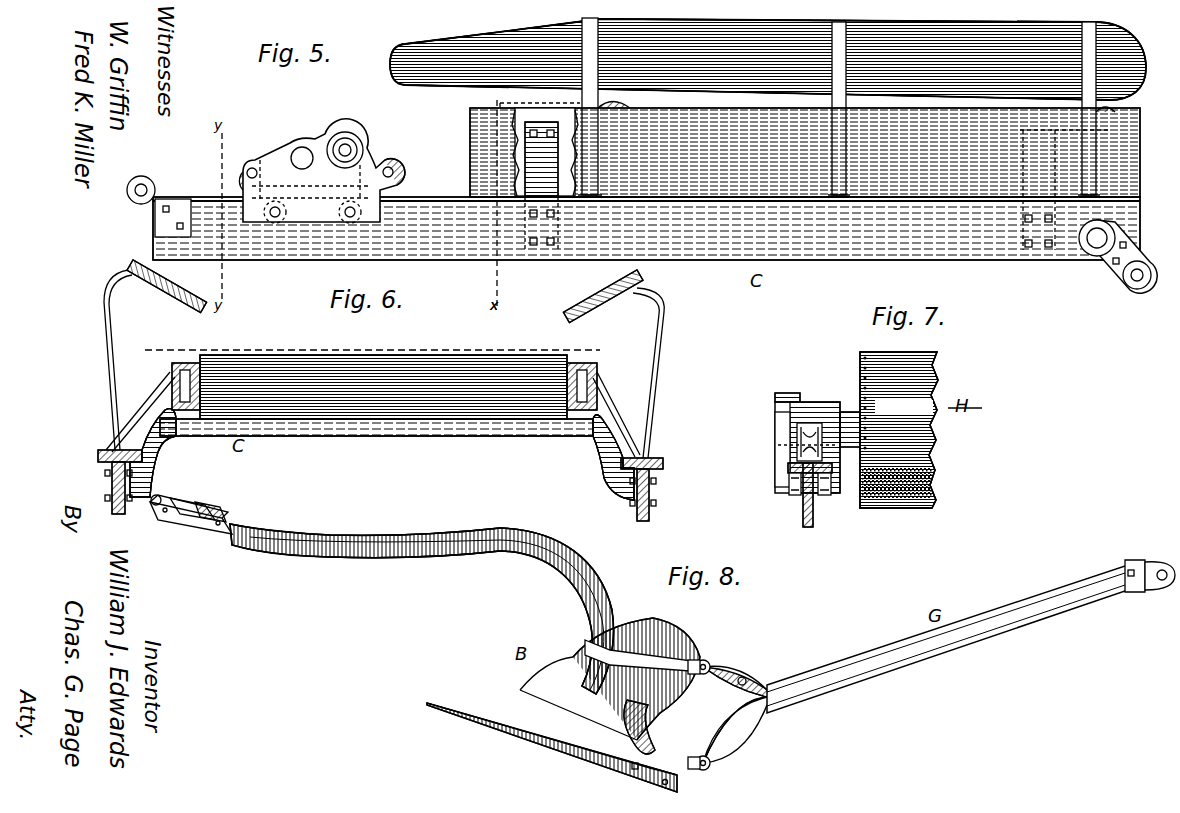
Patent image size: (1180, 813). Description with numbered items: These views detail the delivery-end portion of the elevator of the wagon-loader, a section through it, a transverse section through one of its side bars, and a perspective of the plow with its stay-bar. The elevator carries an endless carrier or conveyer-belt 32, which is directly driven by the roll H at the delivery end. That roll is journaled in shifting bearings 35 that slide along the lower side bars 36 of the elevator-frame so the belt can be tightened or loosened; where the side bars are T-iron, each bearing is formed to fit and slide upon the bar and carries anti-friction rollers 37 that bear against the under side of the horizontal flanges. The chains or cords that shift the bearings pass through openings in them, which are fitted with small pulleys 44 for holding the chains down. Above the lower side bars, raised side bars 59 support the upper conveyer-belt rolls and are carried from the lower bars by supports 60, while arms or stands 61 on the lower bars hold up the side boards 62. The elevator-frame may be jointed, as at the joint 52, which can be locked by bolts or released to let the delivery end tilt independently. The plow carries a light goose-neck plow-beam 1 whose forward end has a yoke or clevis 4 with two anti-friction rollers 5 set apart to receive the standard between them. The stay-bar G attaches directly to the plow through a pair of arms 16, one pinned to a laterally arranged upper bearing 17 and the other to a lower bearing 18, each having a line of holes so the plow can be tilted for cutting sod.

In FIG. 8, the plow-beam 1 is at (400, 556).
In FIG. 8, the yoke or clevis 4 is at (180, 528).
In FIG. 8, the anti-friction rollers 5 is at (185, 503).
In FIG. 8, the arms 16 is at (730, 680).
In FIG. 8, the bearing 17 is at (706, 660).
In FIG. 8, the bearing 18 is at (706, 771).
In FIG. 6, the endless carrier or conveyer-belt 32 is at (572, 362).
In FIG. 5, the shifting bearings 35 is at (305, 140).
In FIG. 7, the shifting bearings 35 is at (826, 404).
In FIG. 5, the side bars 36 is at (605, 250).
In FIG. 6, the side bars 36 is at (112, 480).
In FIG. 7, the side bars 36 is at (813, 517).
In FIG. 5, the anti-friction rollers 37 is at (275, 224).
In FIG. 7, the anti-friction rollers 37 is at (792, 494).
In FIG. 5, the pulleys 44 is at (258, 150).
In FIG. 7, the pulleys 44 is at (780, 445).
In FIG. 5, the joint 52 is at (1123, 256).
In FIG. 5, the raised side bars 59 is at (515, 150).
In FIG. 6, the raised side bars 59 is at (172, 375).
In FIG. 5, the supports 60 is at (528, 185).
In FIG. 5, the arms or stands 61 is at (602, 103).
In FIG. 6, the arms or stands 61 is at (108, 380).
In FIG. 5, the side boards 62 is at (720, 22).
In FIG. 6, the side boards 62 is at (150, 300).